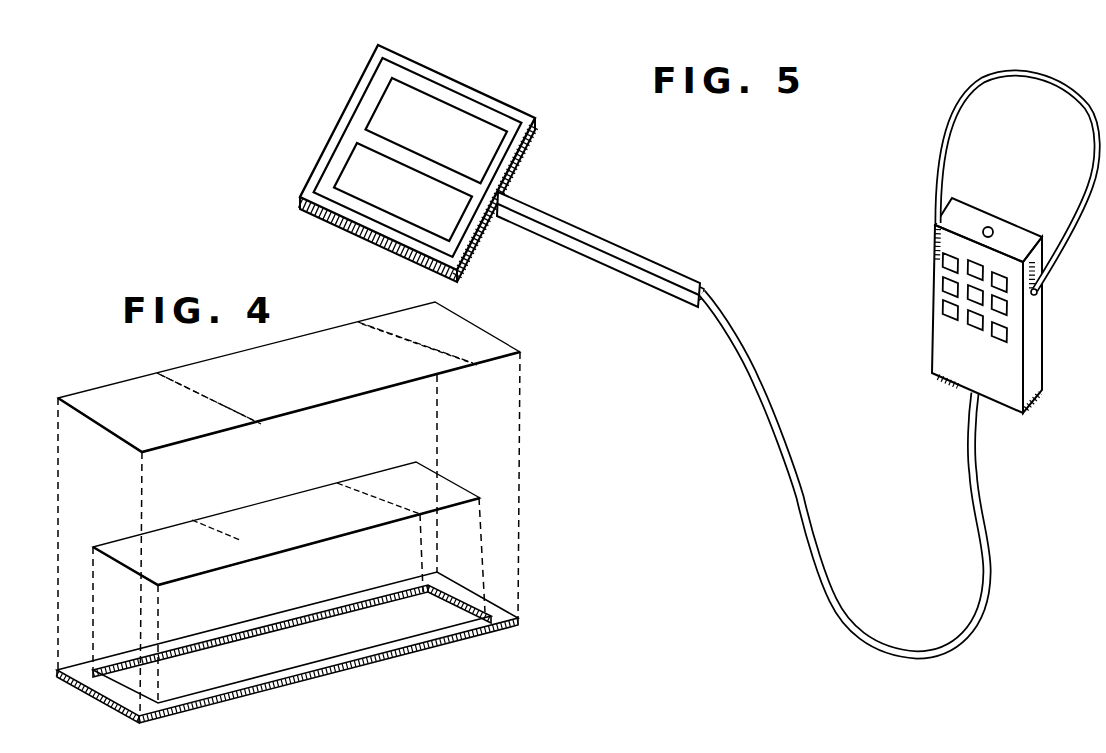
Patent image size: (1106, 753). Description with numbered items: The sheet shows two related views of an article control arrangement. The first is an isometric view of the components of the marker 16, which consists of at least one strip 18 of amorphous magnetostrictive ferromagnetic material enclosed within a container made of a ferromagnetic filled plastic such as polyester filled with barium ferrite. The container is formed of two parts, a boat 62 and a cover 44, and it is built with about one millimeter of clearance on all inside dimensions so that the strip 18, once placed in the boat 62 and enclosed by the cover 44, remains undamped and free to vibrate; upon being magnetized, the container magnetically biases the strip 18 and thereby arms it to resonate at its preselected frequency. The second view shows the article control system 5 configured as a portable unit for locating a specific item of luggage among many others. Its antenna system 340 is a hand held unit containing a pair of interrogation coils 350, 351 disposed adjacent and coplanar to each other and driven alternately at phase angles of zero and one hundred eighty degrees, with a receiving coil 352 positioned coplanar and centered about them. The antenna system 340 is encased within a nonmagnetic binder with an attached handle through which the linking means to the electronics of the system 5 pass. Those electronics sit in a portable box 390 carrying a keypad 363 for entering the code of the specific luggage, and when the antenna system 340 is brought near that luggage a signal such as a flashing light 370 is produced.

In FIG. 4, the marker 16 is at (340, 512).
In FIG. 4, the cover 44 is at (312, 378).
In FIG. 4, the strip 18 is at (306, 526).
In FIG. 4, the boat 62 is at (343, 672).
In FIG. 5, the article control system 5 is at (778, 250).
In FIG. 5, the antenna system 340 is at (453, 176).
In FIG. 5, the receiving coil 352 is at (460, 83).
In FIG. 5, the interrogation coil 350 is at (463, 112).
In FIG. 5, the interrogation coil 351 is at (442, 182).
In FIG. 5, the hand-held control unit 390 is at (964, 290).
In FIG. 5, the keypad 363 is at (980, 323).
In FIG. 5, the flashing light 370 is at (990, 227).